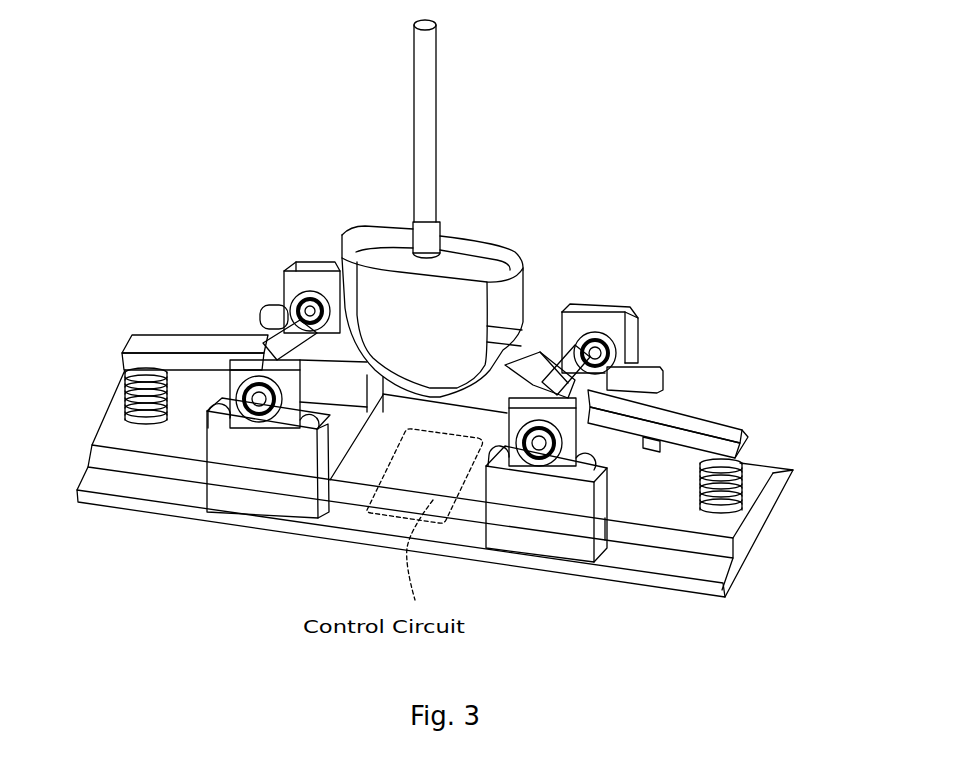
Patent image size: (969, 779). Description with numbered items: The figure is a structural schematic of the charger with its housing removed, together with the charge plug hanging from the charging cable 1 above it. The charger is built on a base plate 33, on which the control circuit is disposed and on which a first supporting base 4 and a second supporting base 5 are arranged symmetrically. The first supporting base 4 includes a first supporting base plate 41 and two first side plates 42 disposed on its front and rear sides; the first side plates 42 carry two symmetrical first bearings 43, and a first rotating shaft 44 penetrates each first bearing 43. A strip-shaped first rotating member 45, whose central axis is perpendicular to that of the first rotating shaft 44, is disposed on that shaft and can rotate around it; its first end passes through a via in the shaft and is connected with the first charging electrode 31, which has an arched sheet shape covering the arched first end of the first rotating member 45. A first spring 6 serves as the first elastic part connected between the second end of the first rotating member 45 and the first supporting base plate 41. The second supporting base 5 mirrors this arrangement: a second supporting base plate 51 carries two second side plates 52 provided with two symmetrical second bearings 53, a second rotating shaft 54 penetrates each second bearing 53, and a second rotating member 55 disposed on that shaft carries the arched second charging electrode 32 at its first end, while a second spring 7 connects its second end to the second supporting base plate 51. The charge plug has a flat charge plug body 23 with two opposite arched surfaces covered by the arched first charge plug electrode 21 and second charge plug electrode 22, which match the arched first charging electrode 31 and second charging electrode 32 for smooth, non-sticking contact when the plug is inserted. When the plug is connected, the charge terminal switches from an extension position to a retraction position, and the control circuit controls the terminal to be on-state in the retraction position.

The charging cable 1 is at (430, 103).
The first charge plug electrode 21 is at (340, 266).
The second charge plug electrode 22 is at (503, 368).
The charge plug body 23 is at (463, 252).
The first charging electrode 31 is at (275, 318).
The second charging electrode 32 is at (520, 358).
The base plate 33 is at (343, 517).
The first supporting base 4 is at (277, 488).
The first supporting base plate 41 is at (125, 463).
The first side plate 42 is at (296, 267).
The first bearing 43 is at (228, 425).
The first rotating shaft 44 is at (295, 297).
The first rotating member 45 is at (198, 345).
The second supporting base 5 is at (542, 543).
The second supporting base plate 51 is at (750, 530).
The second side plate 52 is at (617, 322).
The second bearing 53 is at (517, 480).
The second rotating shaft 54 is at (647, 370).
The second rotating member 55 is at (717, 430).
The first spring 6 is at (120, 403).
The second spring 7 is at (740, 465).